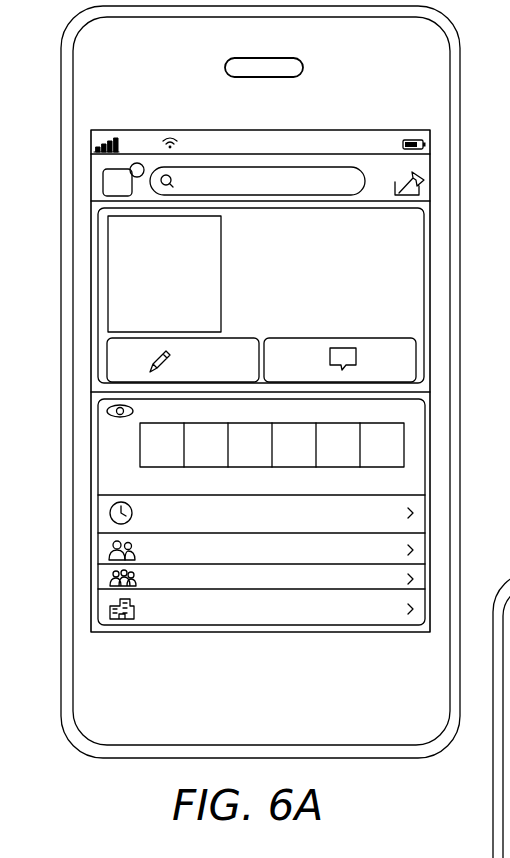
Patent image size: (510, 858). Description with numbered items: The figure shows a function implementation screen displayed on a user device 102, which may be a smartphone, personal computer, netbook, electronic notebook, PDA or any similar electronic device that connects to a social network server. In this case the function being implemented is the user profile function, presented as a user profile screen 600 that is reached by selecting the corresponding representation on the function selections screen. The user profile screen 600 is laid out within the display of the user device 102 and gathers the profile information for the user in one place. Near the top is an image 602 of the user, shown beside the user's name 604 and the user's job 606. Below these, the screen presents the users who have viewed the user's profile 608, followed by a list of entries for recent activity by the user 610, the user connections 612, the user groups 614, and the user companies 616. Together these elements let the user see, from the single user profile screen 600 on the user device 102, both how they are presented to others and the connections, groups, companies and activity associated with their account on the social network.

The user device 102 is at (437, 93).
The user profile screen 600 is at (413, 223).
The image 602 is at (146, 260).
The name 604 is at (318, 229).
The job 606 is at (385, 263).
The users who have viewed the user's profile 608 is at (395, 412).
The recent activity 610 is at (100, 512).
The user connections 612 is at (100, 545).
The user groups 614 is at (100, 578).
The user companies 616 is at (100, 607).